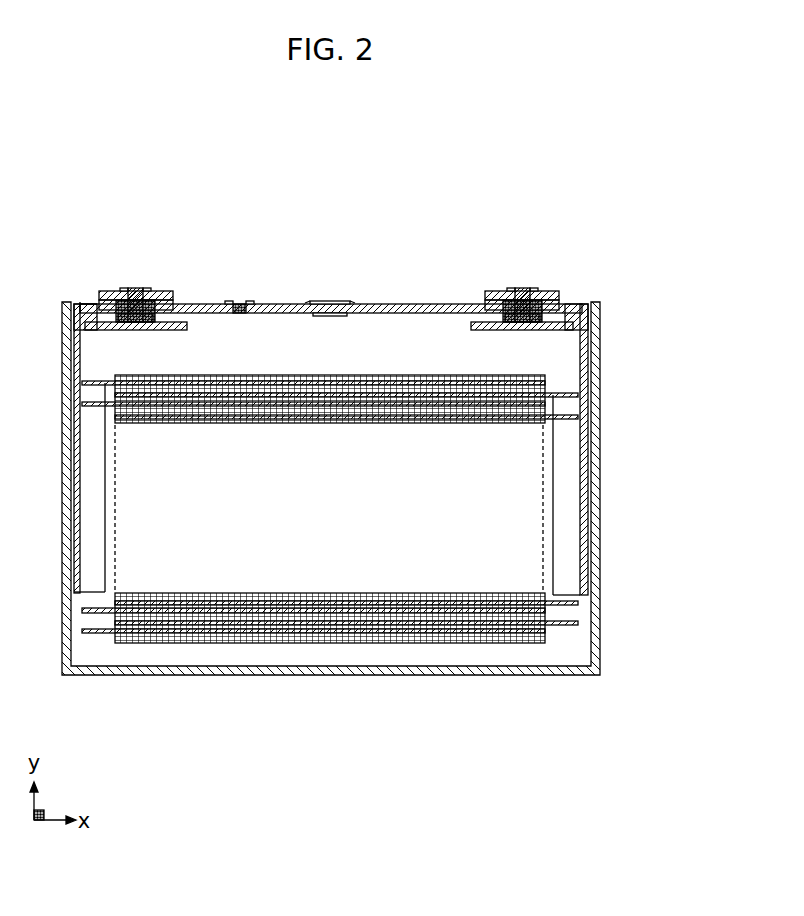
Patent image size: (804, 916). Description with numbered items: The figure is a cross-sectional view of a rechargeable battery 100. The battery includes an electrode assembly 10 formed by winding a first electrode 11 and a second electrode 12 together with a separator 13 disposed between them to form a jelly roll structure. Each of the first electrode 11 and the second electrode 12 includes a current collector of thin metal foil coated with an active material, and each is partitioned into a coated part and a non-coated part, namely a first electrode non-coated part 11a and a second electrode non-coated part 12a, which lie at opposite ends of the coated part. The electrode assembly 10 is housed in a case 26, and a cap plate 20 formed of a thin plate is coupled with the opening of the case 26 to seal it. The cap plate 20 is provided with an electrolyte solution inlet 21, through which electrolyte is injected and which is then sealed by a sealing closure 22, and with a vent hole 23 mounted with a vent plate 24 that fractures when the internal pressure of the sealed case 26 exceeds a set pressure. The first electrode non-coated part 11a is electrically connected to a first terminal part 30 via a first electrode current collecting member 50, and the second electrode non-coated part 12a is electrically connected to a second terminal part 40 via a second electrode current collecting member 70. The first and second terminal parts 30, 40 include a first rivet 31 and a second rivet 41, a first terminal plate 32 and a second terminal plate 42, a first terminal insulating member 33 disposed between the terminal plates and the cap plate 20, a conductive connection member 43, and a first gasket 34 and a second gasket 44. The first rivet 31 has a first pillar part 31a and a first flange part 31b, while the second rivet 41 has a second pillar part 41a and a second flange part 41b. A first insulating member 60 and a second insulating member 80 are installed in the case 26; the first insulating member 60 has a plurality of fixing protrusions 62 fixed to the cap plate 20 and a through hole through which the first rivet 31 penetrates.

The rechargeable battery 100 is at (353, 404).
The electrode assembly 10 is at (327, 549).
The first electrode 11 is at (161, 634).
The first electrode non-coated part 11a is at (93, 634).
The second electrode 12 is at (225, 626).
The second electrode non-coated part 12a is at (557, 626).
The separator 13 is at (322, 620).
The cap plate 20 is at (380, 300).
The electrolyte solution inlet 21 is at (240, 315).
The sealing closure 22 is at (238, 302).
The vent hole 23 is at (326, 316).
The vent plate 24 is at (330, 301).
The case 26 is at (598, 563).
The first terminal part 30 is at (111, 296).
The first rivet 31 is at (136, 280).
The first pillar part 31a is at (135, 329).
The first flange part 31b is at (173, 331).
The first terminal plate 32 is at (160, 292).
The first terminal insulating member 33 is at (175, 300).
The first gasket 34 is at (108, 297).
The second terminal part 40 is at (570, 299).
The second rivet 41 is at (521, 284).
The second pillar part 41a is at (522, 329).
The second flange part 41b is at (490, 331).
The second terminal plate 42 is at (540, 292).
The conductive connection member 43 is at (560, 300).
The second gasket 44 is at (498, 297).
The first electrode current collecting member 50 is at (72, 438).
The first insulating member 60 is at (70, 324).
The fixing protrusion 62 is at (82, 307).
The second electrode current collecting member 70 is at (592, 440).
The second insulating member 80 is at (592, 325).